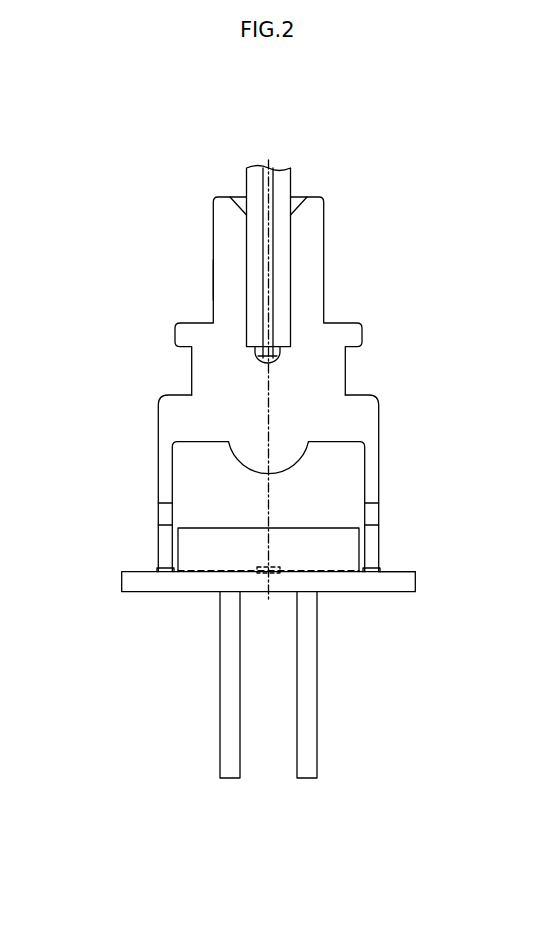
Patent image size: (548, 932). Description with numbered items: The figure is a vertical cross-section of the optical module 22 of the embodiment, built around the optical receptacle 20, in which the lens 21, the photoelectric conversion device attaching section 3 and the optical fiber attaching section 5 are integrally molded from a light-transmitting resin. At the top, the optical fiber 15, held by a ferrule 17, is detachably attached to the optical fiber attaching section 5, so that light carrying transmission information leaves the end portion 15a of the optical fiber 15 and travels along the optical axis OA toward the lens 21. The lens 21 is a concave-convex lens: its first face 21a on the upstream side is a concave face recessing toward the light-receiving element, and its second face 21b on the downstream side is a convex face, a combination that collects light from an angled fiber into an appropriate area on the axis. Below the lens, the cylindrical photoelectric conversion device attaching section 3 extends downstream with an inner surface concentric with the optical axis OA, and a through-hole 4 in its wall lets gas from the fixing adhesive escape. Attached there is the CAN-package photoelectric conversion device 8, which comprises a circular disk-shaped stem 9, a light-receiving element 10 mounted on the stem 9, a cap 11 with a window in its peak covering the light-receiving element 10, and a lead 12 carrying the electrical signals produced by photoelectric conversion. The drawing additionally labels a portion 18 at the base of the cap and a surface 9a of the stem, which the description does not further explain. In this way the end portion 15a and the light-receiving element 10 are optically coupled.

The optical module 22 is at (128, 220).
The optical receptacle 20 is at (213, 253).
The optical fiber attaching section 5 is at (213, 297).
The optical fiber 15 is at (273, 258).
The end portion of the optical fiber 15a is at (280, 360).
The ferrule 17 is at (291, 294).
The lens 21 is at (85, 370).
The first face 21a is at (255, 351).
The second face 21b is at (237, 463).
The optical axis OA is at (268, 418).
The photoelectric conversion device attaching section 3 is at (158, 487).
The through-hole 4 is at (165, 517).
The welded portion 18 is at (167, 572).
The photoelectric conversion device 8 is at (115, 584).
The stem 9 is at (142, 592).
The stem upper surface 9a is at (392, 572).
The light-receiving element 10 is at (267, 560).
The cap 11 is at (328, 527).
The lead 12 is at (220, 687).